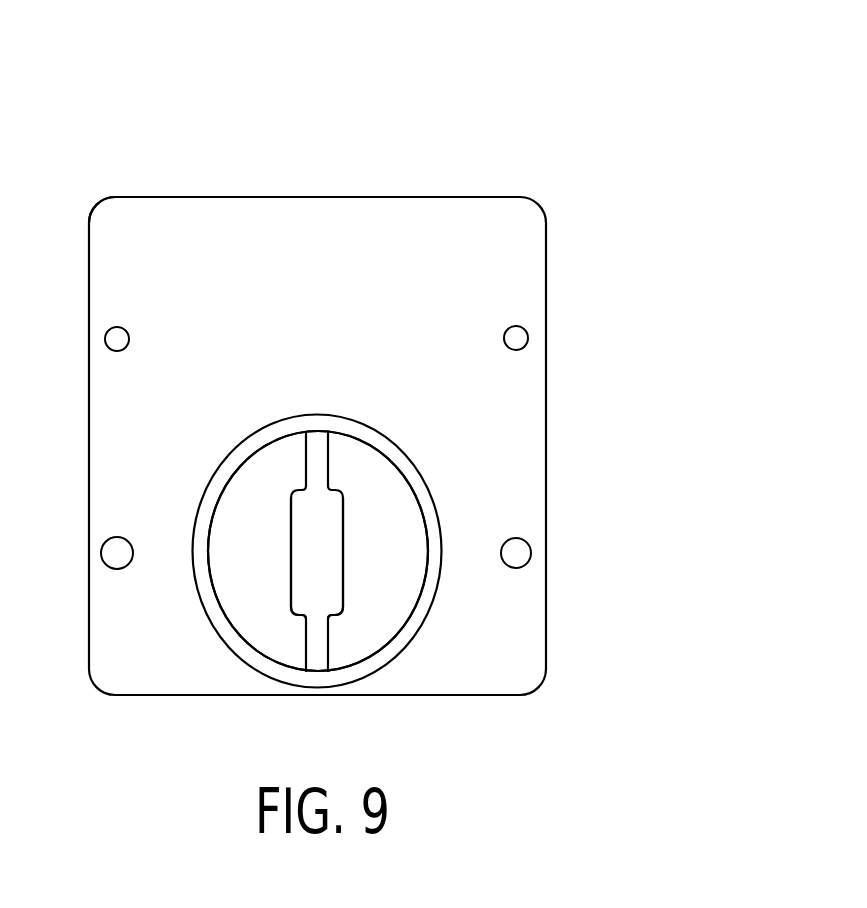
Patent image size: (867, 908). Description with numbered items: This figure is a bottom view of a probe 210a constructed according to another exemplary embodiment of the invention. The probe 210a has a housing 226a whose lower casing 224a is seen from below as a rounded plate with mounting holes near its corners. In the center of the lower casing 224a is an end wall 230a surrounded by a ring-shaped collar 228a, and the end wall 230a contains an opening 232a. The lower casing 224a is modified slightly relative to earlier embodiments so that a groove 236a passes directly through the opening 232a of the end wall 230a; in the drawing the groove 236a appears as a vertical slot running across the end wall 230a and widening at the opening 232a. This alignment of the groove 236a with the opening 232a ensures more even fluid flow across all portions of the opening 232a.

The probe 210a is at (409, 407).
The lower casing 224a is at (436, 222).
The housing 226a is at (218, 176).
The annular collar 228a is at (436, 522).
The end wall 230a is at (392, 496).
The opening 232a is at (332, 583).
The groove 236a is at (317, 443).